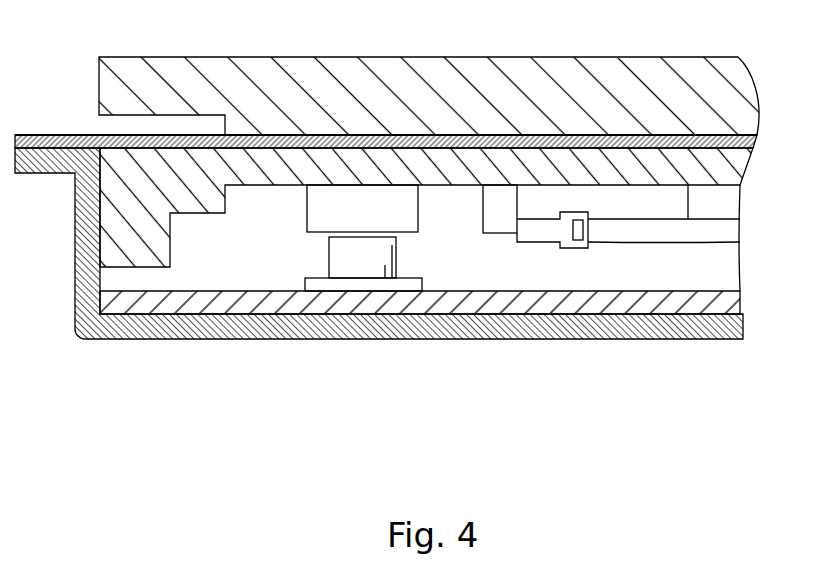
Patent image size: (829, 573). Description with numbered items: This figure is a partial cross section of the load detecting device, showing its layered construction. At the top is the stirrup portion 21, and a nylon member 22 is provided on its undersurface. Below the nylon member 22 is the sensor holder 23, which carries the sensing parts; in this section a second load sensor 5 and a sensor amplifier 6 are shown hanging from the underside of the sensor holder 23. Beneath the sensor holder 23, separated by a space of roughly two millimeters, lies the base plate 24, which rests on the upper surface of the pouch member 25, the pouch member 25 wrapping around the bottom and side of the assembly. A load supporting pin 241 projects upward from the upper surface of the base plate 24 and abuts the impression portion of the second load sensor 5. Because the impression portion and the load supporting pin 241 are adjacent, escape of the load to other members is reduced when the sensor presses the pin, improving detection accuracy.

The stirrup portion 21 is at (747, 83).
The nylon member 22 is at (757, 140).
The sensor holder 23 is at (742, 173).
The base plate 24 is at (740, 300).
The pouch member 25 is at (738, 327).
The load supporting pin 241 is at (337, 262).
The second load sensor 5 is at (413, 220).
The sensor amplifier 6 is at (527, 199).